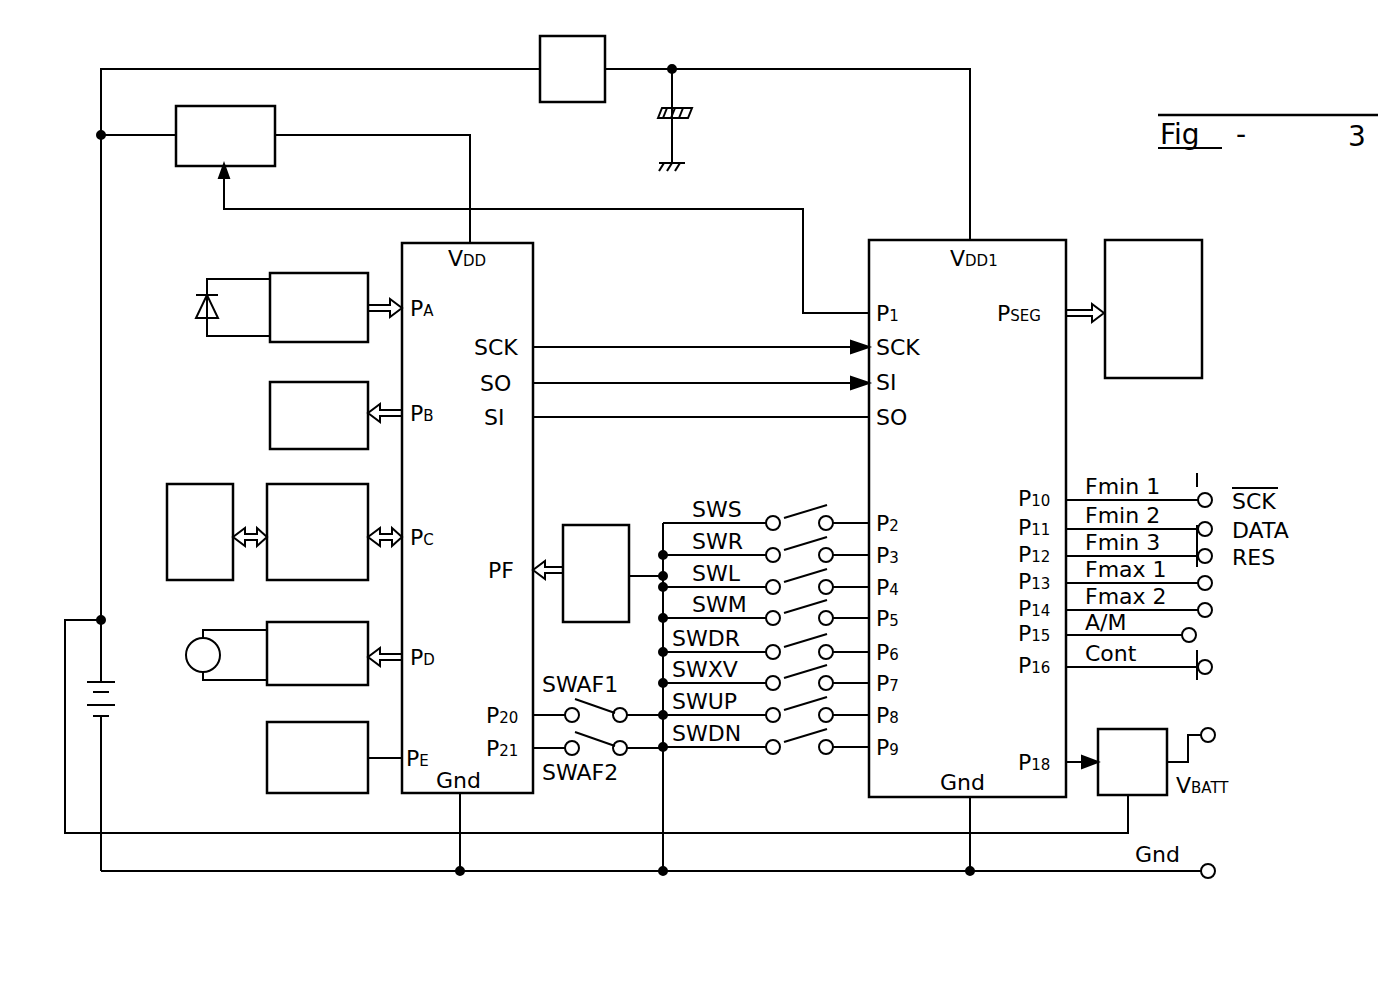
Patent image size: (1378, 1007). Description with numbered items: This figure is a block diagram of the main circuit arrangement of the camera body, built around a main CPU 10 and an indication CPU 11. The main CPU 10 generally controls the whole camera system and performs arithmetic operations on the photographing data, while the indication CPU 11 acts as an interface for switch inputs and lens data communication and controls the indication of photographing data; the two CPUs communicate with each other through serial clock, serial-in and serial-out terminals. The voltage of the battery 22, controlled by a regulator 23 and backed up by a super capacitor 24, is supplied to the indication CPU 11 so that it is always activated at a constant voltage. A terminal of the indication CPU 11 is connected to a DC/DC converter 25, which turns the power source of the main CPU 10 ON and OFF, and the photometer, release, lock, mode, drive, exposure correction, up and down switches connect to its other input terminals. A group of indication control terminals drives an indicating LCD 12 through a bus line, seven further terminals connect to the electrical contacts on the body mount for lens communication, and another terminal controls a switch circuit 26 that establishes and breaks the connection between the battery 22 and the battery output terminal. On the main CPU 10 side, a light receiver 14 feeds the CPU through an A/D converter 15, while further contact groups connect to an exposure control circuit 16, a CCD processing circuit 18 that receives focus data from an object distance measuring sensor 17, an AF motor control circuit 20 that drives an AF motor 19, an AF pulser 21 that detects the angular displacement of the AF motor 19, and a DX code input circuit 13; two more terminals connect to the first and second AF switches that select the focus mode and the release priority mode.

The main CPU 10 is at (533, 290).
The indication CPU 11 is at (1003, 240).
The indicating LCD 12 is at (1150, 240).
The DX code input circuit 13 is at (600, 525).
The light receiver 14 is at (196, 307).
The A/D converter 15 is at (318, 273).
The exposure control circuit 16 is at (270, 408).
The automatic focusing CCD object distance measuring sensor 17 is at (197, 484).
The CCD processing circuit 18 is at (298, 484).
The AF motor 19 is at (198, 657).
The AF motor control circuit 20 is at (290, 622).
The AF pulser 21 is at (267, 752).
The battery 22 is at (118, 697).
The regulator 23 is at (605, 60).
The super capacitor 24 is at (692, 113).
The DC/DC converter 25 is at (276, 123).
The switch circuit 26 is at (1150, 797).